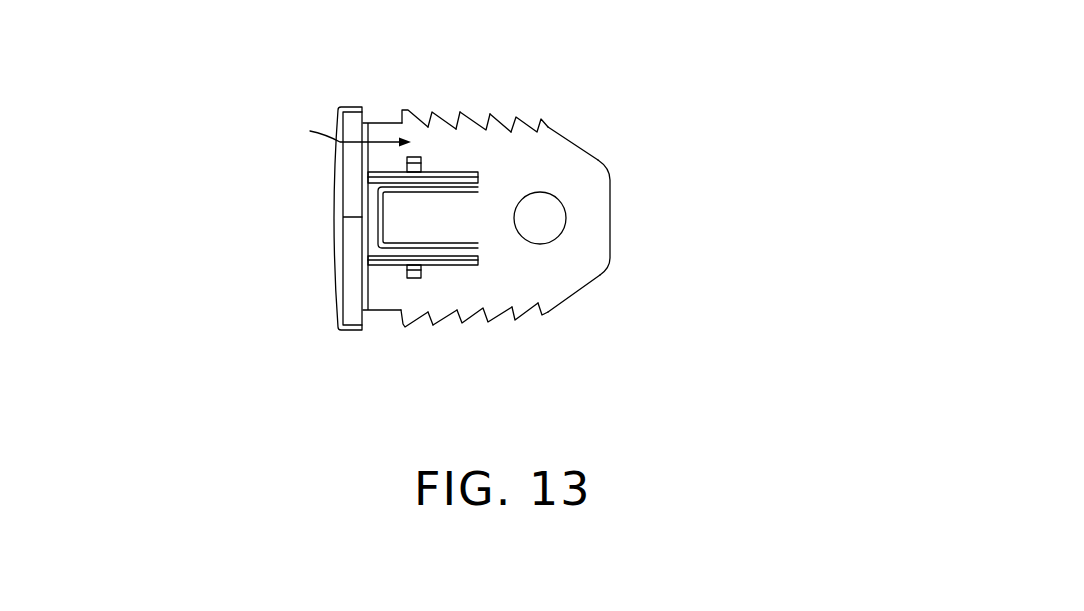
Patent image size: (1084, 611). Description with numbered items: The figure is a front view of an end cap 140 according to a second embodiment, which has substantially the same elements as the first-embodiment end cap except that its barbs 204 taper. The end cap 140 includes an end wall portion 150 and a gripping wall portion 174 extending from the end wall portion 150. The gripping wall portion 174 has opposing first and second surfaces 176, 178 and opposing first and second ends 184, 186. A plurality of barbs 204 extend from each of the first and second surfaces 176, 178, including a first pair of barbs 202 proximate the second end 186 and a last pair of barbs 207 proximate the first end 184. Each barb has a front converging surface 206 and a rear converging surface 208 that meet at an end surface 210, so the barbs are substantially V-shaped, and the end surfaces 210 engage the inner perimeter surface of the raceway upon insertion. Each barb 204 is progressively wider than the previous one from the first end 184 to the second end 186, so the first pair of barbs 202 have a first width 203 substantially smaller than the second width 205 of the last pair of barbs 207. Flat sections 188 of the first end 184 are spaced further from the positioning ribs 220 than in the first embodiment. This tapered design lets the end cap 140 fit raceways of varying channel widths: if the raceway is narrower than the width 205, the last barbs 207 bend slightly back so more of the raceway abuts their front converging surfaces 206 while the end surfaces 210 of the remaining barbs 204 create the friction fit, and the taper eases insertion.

The end cap 140 is at (665, 70).
The end wall portion 150 is at (314, 192).
The gripping wall portion 174 is at (639, 265).
The first surface 176 is at (545, 124).
The second surface 178 is at (538, 316).
The first end 184 is at (340, 292).
The second end 186 is at (587, 203).
The flat sections 188 is at (376, 124).
The first pair of barbs 202 is at (548, 127).
The first width 203 is at (558, 160).
The barbs 204 is at (477, 70).
The second width 205 is at (335, 129).
The front converging surface 206 is at (503, 118).
The last pair of barbs 207 is at (401, 121).
The rear converging surface 208 is at (484, 126).
The end surface 210 is at (430, 126).
The positioning ribs 220 is at (428, 193).